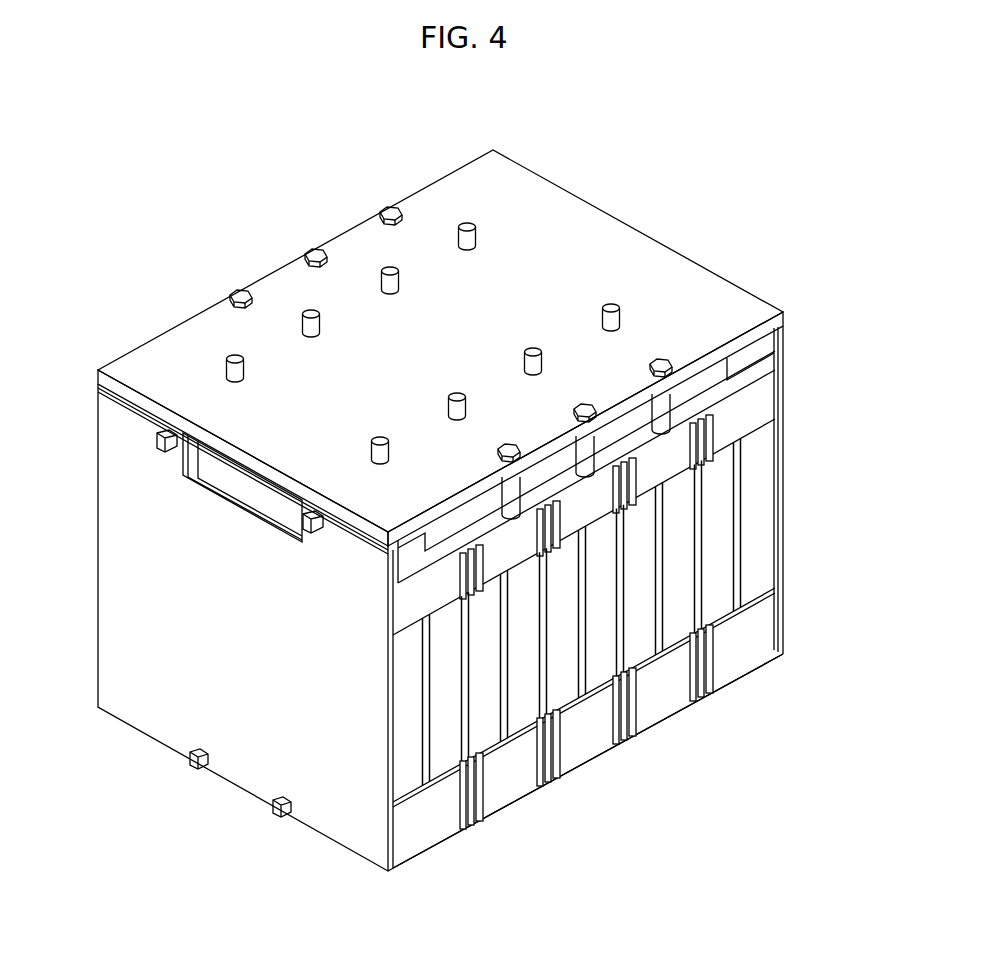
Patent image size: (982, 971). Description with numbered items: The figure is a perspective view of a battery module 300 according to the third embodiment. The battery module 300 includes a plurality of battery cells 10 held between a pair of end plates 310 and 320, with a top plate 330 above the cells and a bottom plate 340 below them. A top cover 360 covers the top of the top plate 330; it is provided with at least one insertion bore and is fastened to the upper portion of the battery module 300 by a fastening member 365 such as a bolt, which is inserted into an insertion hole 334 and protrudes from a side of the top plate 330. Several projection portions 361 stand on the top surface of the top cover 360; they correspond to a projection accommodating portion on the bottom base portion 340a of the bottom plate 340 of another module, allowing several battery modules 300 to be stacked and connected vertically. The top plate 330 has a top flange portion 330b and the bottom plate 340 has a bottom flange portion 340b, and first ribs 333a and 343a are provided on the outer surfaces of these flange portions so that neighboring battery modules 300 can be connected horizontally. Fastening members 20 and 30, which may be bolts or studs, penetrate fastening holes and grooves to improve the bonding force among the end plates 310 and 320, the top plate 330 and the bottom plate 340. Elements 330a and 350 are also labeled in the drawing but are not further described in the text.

The battery module 300 is at (261, 155).
The battery cell 10 is at (761, 561).
The fastening member 20 is at (273, 810).
The fastening member 30 is at (305, 521).
The end plate 310 is at (135, 628).
The end plate 320 is at (789, 495).
The top plate 330 is at (843, 355).
The upper frame first member 330a is at (752, 368).
The top flange portion 330b is at (772, 397).
The first rib 333a is at (715, 430).
The insertion hole 334 is at (664, 406).
The bottom plate 340 is at (727, 761).
The bottom base portion 340a is at (605, 750).
The bottom flange portion 340b is at (650, 713).
The first rib 343a is at (482, 812).
The partition 350 is at (710, 610).
The top cover 360 is at (203, 347).
The projection portion 361 is at (312, 318).
The fastening member 365 is at (240, 292).